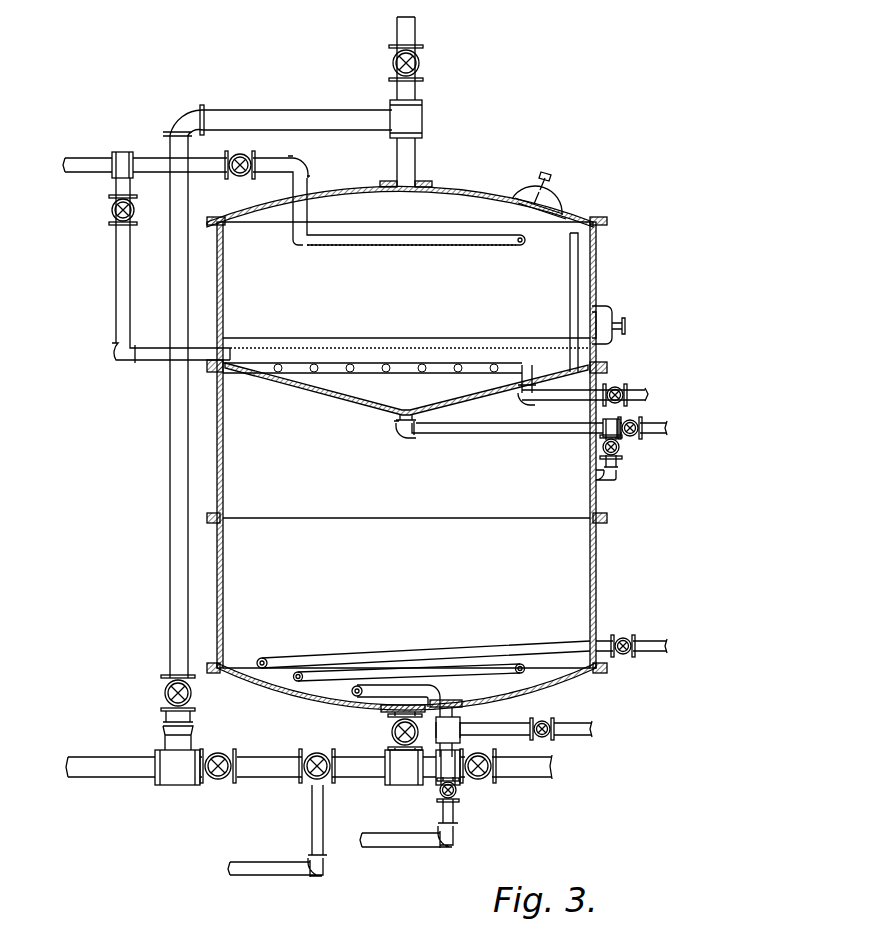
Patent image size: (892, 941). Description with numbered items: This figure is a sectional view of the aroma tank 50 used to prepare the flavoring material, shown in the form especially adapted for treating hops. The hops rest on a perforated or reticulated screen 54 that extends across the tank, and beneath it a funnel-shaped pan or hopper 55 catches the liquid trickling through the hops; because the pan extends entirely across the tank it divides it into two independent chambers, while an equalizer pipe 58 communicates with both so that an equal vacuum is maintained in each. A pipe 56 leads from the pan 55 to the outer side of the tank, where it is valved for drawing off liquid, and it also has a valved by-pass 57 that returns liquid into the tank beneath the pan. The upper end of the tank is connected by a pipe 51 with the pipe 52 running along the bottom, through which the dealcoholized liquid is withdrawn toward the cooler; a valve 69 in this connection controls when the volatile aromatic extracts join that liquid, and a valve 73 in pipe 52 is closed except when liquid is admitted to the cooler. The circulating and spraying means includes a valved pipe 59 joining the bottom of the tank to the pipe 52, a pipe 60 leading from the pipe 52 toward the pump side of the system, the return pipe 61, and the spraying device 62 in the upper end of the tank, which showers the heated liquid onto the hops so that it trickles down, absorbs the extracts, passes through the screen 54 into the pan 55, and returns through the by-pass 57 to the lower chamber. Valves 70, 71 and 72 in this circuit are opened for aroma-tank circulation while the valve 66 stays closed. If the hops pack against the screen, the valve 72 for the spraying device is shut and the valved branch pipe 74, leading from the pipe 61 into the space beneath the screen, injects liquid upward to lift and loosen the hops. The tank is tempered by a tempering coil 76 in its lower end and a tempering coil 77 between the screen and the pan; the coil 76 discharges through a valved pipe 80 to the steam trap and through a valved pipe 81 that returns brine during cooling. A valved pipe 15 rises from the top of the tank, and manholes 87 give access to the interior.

The inlet pipe with valve 15 is at (417, 38).
The aroma tank 50 is at (217, 586).
The pipe 51 is at (285, 112).
The pipe 52 is at (104, 760).
The perforated or reticulated screen 54 is at (430, 338).
The pan or hopper 55 is at (345, 402).
The pipe 56 is at (495, 433).
The valved by-pass 57 is at (620, 455).
The equalizer pipe 58 is at (570, 262).
The valved pipe 59 is at (395, 738).
The pipe 60 is at (270, 872).
The return pipe 61 is at (82, 160).
The spraying device 62 is at (437, 245).
The valve 66 is at (220, 782).
The valve 69 is at (165, 693).
The valve 70 is at (395, 727).
The valve 71 is at (318, 752).
The valve 72 is at (250, 162).
The valve 73 is at (484, 782).
The valved branch pipe 74 is at (118, 312).
The tempering coil 76 is at (405, 652).
The tempering coil 77 is at (403, 371).
The valved pipe 80 is at (420, 847).
The valved pipe 81 is at (574, 731).
The manholes 87 is at (566, 206).